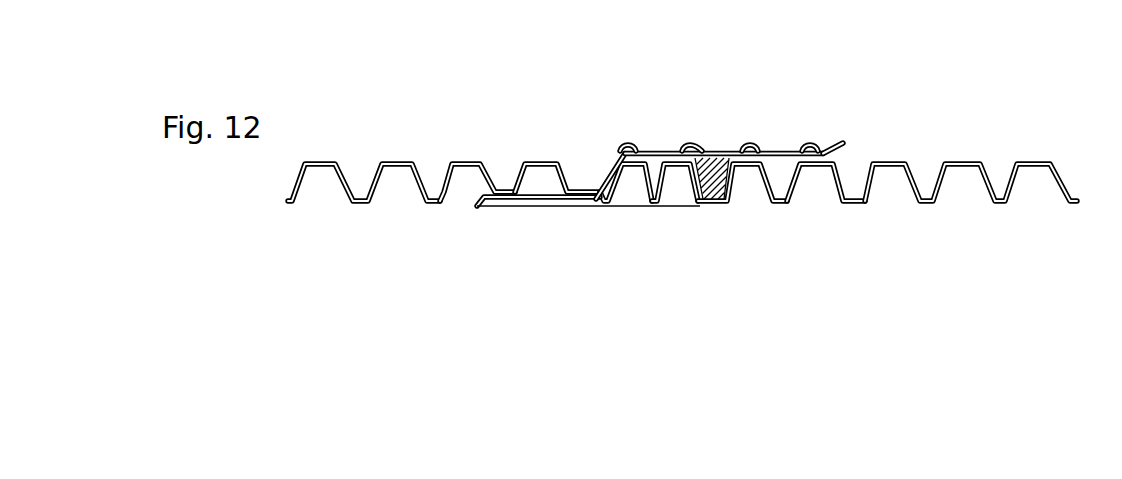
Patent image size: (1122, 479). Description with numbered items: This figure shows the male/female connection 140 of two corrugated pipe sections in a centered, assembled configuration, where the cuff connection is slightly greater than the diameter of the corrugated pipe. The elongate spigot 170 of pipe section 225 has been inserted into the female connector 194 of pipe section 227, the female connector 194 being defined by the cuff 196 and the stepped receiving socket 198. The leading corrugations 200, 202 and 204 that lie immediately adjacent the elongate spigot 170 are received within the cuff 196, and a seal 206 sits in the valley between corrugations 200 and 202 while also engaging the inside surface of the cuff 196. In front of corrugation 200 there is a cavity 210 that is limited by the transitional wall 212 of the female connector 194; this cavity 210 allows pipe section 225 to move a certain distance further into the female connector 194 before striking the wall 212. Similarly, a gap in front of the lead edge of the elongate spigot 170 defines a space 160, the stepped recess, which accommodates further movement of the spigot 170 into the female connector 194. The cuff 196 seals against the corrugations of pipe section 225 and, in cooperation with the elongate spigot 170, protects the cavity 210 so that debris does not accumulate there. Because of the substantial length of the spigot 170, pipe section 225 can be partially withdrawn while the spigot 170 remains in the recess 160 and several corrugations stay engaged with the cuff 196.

The pipe section 227 is at (356, 132).
The stepped recess 160 is at (470, 190).
The stepped receiving socket 198 is at (537, 187).
The cavity 210 is at (633, 176).
The leading corrugation 200 is at (668, 182).
The leading corrugation 202 is at (739, 187).
The leading corrugation 204 is at (820, 183).
The pipe section 225 is at (988, 127).
The elongate spigot 170 is at (550, 207).
The transitional wall 212 is at (605, 165).
The female connector 194 is at (638, 130).
The seal 206 is at (741, 148).
The male/female connection 140 is at (702, 124).
The cuff 196 is at (729, 140).